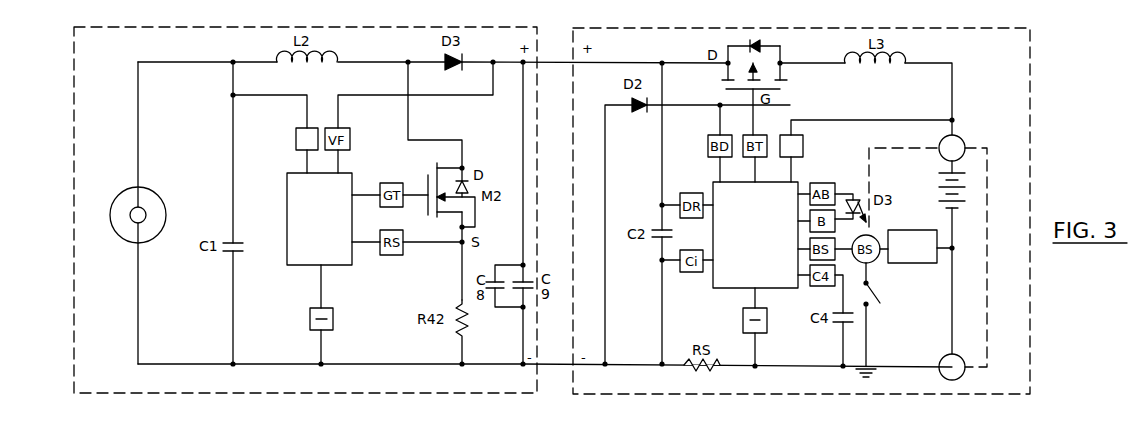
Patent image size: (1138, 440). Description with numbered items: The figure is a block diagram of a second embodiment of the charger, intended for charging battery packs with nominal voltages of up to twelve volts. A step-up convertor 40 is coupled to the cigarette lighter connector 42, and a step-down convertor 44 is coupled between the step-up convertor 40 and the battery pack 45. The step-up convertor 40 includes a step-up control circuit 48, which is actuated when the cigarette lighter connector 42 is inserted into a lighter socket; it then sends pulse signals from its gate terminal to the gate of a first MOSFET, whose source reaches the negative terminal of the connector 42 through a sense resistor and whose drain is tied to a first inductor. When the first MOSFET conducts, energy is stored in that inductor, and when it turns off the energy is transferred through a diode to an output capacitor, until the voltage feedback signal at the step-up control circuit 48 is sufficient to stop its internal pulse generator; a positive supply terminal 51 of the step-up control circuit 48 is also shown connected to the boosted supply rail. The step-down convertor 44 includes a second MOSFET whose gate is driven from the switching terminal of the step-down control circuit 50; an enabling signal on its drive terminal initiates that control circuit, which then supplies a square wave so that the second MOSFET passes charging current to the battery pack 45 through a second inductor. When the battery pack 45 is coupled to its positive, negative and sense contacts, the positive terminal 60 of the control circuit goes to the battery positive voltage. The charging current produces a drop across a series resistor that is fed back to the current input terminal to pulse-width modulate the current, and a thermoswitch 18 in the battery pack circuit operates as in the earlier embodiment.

The thermoswitch 18 is at (884, 295).
The step-up convertor 40 is at (73, 356).
The cigarette lighter connector 42 is at (146, 232).
The step-down convertor 44 is at (1025, 378).
The battery pack 45 is at (989, 165).
The step-up control circuit 48 is at (297, 214).
The step-down control circuit 50 is at (728, 275).
The positive supply terminal of step-up control 51 is at (296, 138).
The positive terminal 60 is at (803, 141).